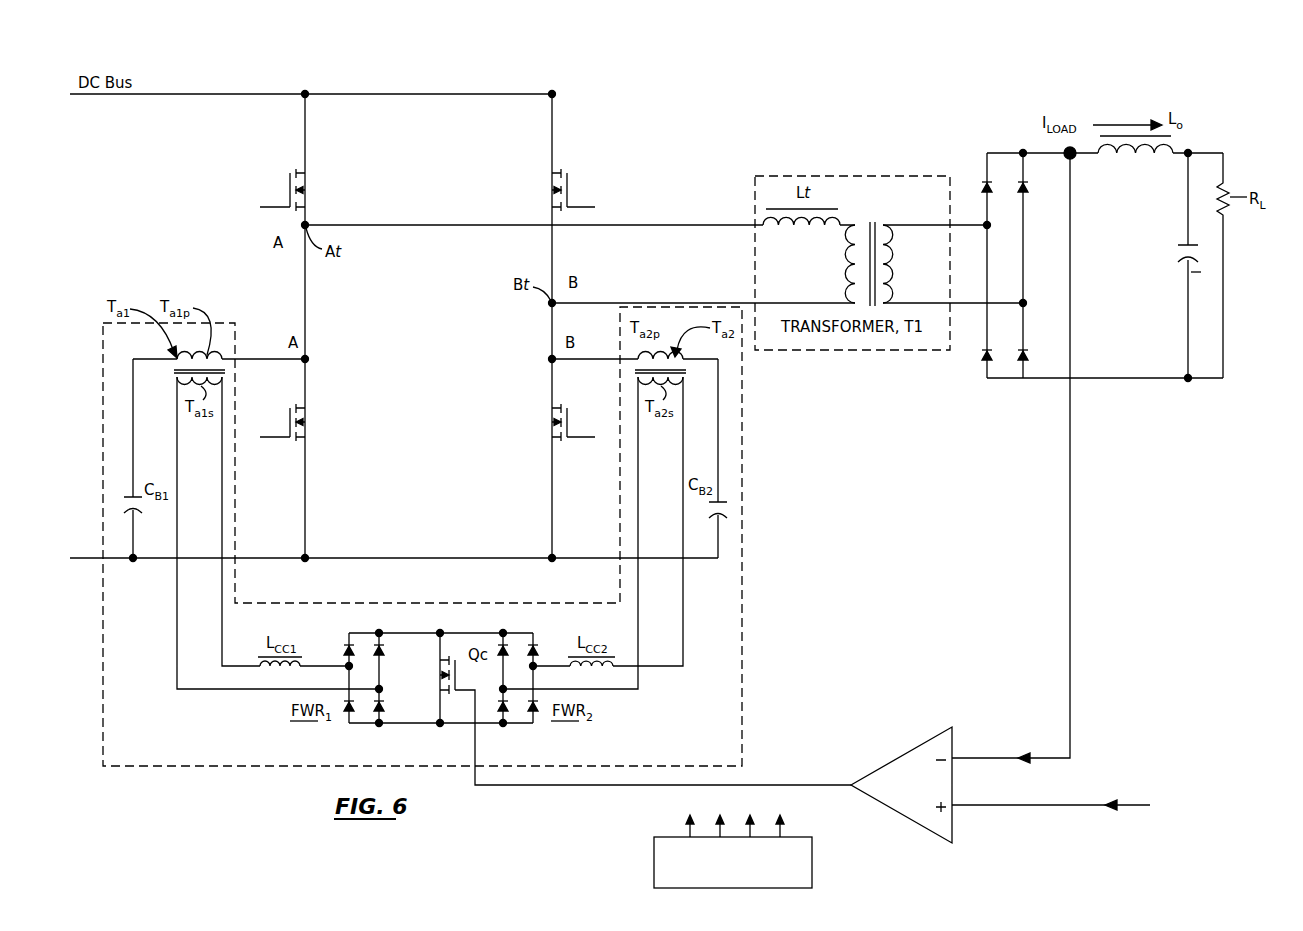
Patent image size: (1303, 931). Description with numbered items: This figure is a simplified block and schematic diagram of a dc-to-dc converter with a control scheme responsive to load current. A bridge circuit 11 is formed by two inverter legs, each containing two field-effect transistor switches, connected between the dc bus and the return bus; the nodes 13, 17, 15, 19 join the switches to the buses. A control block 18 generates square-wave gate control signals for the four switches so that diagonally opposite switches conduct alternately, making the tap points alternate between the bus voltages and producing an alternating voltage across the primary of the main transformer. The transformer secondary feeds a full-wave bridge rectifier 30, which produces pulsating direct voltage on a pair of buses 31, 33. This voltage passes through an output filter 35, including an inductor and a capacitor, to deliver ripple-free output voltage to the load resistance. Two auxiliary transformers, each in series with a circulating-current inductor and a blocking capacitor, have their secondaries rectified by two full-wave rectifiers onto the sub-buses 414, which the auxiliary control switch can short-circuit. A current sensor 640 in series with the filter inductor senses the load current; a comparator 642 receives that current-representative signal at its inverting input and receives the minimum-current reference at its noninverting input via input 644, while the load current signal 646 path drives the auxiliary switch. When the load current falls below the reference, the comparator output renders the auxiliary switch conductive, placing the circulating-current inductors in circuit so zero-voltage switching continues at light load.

The bridge circuit 11 is at (403, 362).
The first node 13 is at (306, 97).
The second node 17 is at (551, 97).
The third node 15 is at (304, 555).
The fourth node 19 is at (553, 555).
The control block 18 is at (812, 857).
The full-wave bridge rectifier 30 is at (1016, 266).
The bus 31 is at (1013, 151).
The bus 33 is at (1053, 380).
The output filter 35 is at (1167, 259).
The sub-bus 414 is at (393, 632).
The current sensor 640 is at (1100, 234).
The comparator 642 is at (959, 718).
The minimum current input 644 is at (1007, 806).
The load current signal 646 is at (805, 784).